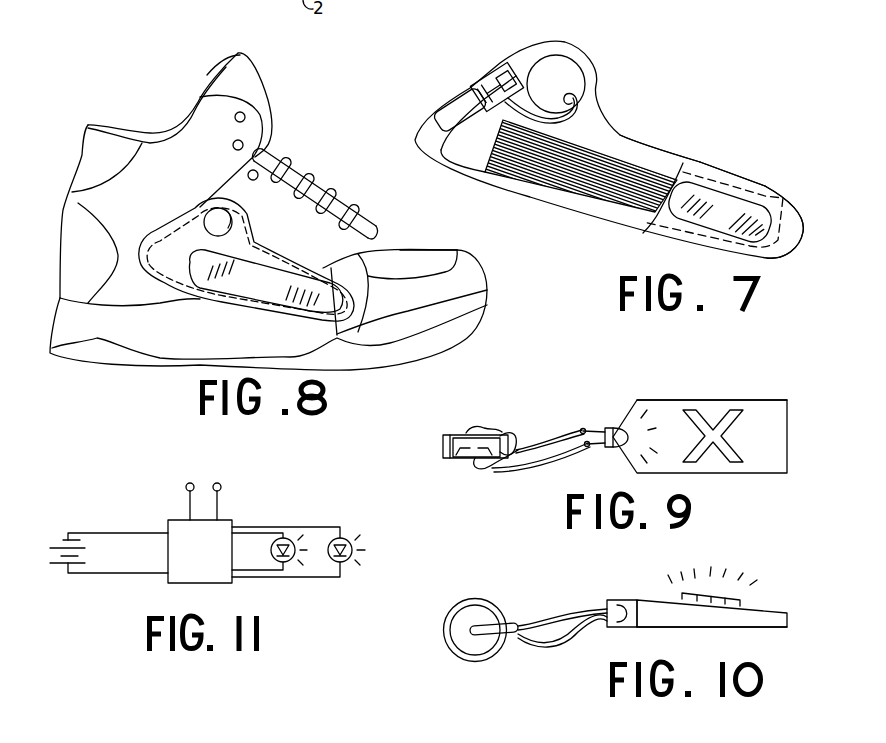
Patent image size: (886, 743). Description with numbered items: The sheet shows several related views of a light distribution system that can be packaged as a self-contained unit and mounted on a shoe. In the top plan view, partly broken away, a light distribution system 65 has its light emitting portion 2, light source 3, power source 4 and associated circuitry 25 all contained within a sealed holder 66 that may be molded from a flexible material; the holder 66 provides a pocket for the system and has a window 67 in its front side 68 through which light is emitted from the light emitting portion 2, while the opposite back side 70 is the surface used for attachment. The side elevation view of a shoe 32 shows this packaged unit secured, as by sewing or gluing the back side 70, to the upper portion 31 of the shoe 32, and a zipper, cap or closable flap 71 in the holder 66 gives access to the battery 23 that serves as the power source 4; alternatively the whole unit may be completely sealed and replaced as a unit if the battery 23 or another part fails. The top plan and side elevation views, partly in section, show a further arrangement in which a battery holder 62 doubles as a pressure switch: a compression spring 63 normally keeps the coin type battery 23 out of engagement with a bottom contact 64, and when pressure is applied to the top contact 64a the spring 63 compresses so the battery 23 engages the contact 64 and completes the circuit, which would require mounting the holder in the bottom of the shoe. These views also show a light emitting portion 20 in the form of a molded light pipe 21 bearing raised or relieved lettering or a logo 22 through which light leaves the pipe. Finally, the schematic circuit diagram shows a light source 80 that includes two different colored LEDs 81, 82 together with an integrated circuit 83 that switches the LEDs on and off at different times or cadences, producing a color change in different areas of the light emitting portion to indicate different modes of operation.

In FIG. 7, the light emitting portion 2 is at (553, 187).
In FIG. 7, the light source 3 is at (462, 82).
In FIG. 7, the power source 4 is at (593, 78).
In FIG. 9, the light emitting portion 20 is at (732, 397).
In FIG. 10, the light emitting portion 20 is at (795, 578).
In FIG. 9, the molded light pipe 21 is at (698, 400).
In FIG. 10, the molded light pipe 21 is at (720, 627).
In FIG. 9, the lettering or logo 22 is at (730, 450).
In FIG. 10, the lettering or logo 22 is at (700, 594).
In FIG. 7, the coin type battery 23 is at (558, 68).
In FIG. 9, the coin type battery 23 is at (488, 440).
In FIG. 10, the coin type battery 23 is at (475, 617).
In FIG. 7, the circuitry 25 is at (484, 68).
In FIG. 8, the upper portion of a shoe 31 is at (135, 238).
In FIG. 8, the shoe 32 is at (302, 155).
In FIG. 9, the battery holder 62 is at (447, 440).
In FIG. 10, the battery holder 62 is at (443, 625).
In FIG. 9, the compression spring 63 is at (453, 455).
In FIG. 9, the contact 64 is at (480, 460).
In FIG. 9, the battery holder top contact 64a is at (470, 430).
In FIG. 10, the battery holder top contact 64a is at (490, 634).
In FIG. 8, the light distribution system 65 is at (187, 300).
In FIG. 7, the light distribution system 65 is at (700, 153).
In FIG. 8, the sealed holder 66 is at (217, 303).
In FIG. 7, the sealed holder 66 is at (747, 170).
In FIG. 8, the window 67 is at (336, 313).
In FIG. 7, the window 67 is at (747, 207).
In FIG. 8, the front side 68 is at (387, 253).
In FIG. 7, the front side 68 is at (785, 243).
In FIG. 7, the back side 70 is at (640, 143).
In FIG. 8, the closable flap 71 is at (220, 217).
In FIG. 11, the light source 80 is at (290, 515).
In FIG. 11, the light emitting diode 81 is at (356, 550).
In FIG. 11, the light emitting diode 82 is at (285, 558).
In FIG. 11, the integrated circuit 83 is at (215, 532).